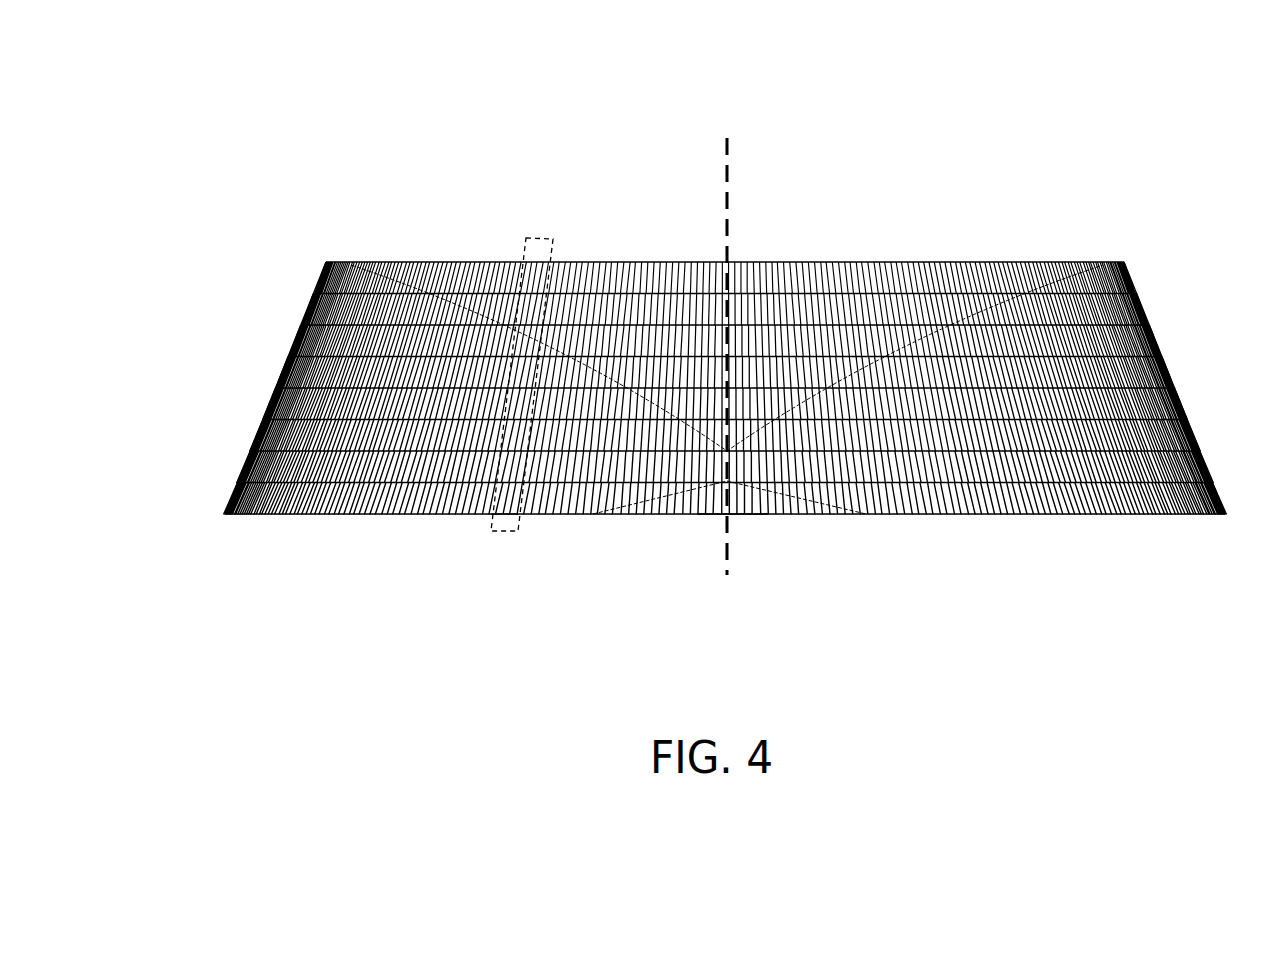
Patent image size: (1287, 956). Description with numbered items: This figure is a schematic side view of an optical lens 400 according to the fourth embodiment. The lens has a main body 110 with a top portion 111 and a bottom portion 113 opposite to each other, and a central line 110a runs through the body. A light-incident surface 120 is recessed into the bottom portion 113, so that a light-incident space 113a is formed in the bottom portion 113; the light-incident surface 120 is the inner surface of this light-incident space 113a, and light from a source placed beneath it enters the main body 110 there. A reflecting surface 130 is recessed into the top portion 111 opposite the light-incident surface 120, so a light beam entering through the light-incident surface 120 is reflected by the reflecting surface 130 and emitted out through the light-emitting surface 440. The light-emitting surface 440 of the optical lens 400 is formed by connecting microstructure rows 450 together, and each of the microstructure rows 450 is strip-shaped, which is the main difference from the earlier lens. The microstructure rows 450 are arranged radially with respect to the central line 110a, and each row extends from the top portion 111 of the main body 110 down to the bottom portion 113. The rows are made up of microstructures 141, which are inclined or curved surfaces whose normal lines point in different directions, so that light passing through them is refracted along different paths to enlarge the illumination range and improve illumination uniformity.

The optical lens 400 is at (188, 125).
The main body 110 is at (387, 400).
The central line 110a is at (721, 142).
The top portion 111 is at (343, 253).
The bottom portion 113 is at (264, 508).
The light-incident space 113a is at (742, 490).
The light-incident surface 120 is at (642, 492).
The reflecting surface 130 is at (873, 362).
The microstructures 141 is at (497, 512).
The light-emitting surface 440 is at (1160, 331).
The microstructure rows 450 is at (528, 229).